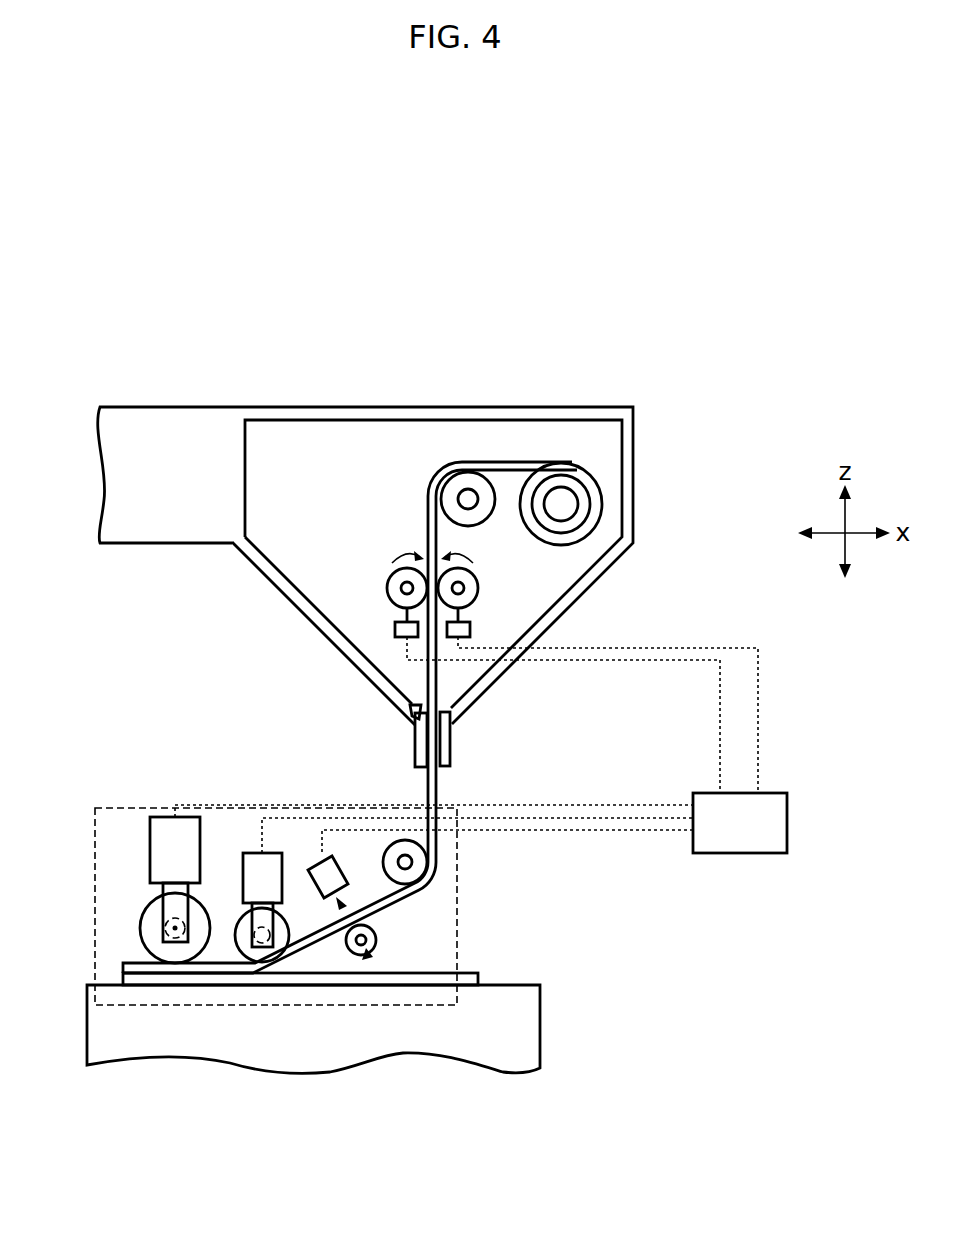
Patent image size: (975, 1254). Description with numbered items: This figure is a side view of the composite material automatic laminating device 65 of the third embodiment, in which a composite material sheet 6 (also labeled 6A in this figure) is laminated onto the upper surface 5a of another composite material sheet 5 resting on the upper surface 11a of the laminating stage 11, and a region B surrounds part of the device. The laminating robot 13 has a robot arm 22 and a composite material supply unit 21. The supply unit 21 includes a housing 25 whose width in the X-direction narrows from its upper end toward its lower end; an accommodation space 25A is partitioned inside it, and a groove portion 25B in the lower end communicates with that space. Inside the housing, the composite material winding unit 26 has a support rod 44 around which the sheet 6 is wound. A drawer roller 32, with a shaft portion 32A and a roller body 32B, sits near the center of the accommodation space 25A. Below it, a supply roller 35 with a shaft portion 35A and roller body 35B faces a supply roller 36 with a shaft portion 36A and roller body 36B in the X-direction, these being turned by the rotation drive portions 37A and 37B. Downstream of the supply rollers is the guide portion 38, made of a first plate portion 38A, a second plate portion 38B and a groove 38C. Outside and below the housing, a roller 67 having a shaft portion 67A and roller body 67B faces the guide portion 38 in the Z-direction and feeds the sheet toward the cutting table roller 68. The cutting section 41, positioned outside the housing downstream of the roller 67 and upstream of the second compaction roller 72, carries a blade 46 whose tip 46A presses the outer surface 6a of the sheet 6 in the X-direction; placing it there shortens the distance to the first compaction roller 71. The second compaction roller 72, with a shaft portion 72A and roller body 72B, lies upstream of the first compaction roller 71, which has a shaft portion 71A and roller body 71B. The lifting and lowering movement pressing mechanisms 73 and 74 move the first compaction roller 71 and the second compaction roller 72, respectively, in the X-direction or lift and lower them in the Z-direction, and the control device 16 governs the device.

The composite material automatic laminating device 65 is at (90, 213).
The laminating robot 13 is at (283, 294).
The robot arm 22 is at (190, 405).
The composite material supply unit 21 is at (268, 393).
The housing 25 is at (555, 407).
The accommodation space 25A is at (331, 407).
The groove portion 25B is at (410, 712).
The drawer roller 32 is at (558, 313).
The shaft portion 32A is at (479, 492).
The roller body 32B is at (466, 487).
The support rod 44 is at (580, 468).
The composite material winding unit 26 is at (743, 368).
The composite material sheet 6 is at (535, 462).
The film leading end 6A is at (55, 947).
The outer surface 6a is at (133, 950).
The supply roller 35 is at (713, 560).
The shaft portion 35A is at (470, 598).
The roller body 35B is at (478, 585).
The supply roller 36 is at (175, 596).
The shaft portion 36A is at (388, 590).
The roller body 36B is at (390, 597).
The rotation drive portion 37A is at (471, 630).
The rotation drive portion 37B is at (395, 630).
The guide portion 38 is at (580, 672).
The first plate portion 38A is at (425, 735).
The second plate portion 38B is at (446, 742).
The groove 38C is at (427, 765).
The control device 16 is at (780, 825).
The region B is at (95, 808).
The lifting and lowering movement pressing mechanism 73 is at (158, 827).
The lifting and lowering movement pressing mechanism 74 is at (255, 862).
The first compaction roller 71 is at (28, 1148).
The shaft portion 71A is at (172, 948).
The roller body 71B is at (150, 946).
The second compaction roller 72 is at (148, 1192).
The shaft portion 72A is at (263, 950).
The roller body 72B is at (240, 947).
The cutting section 41 is at (311, 908).
The blade 46 is at (356, 955).
The tip 46A is at (372, 965).
The roller 67 is at (395, 1178).
The shaft portion 67A is at (410, 866).
The roller body 67B is at (405, 884).
The cutting table roller 68 is at (400, 886).
The composite material sheet 5 is at (482, 978).
The upper surface 5a is at (478, 972).
The laminating stage 11 is at (512, 1045).
The upper surface 11a is at (515, 985).